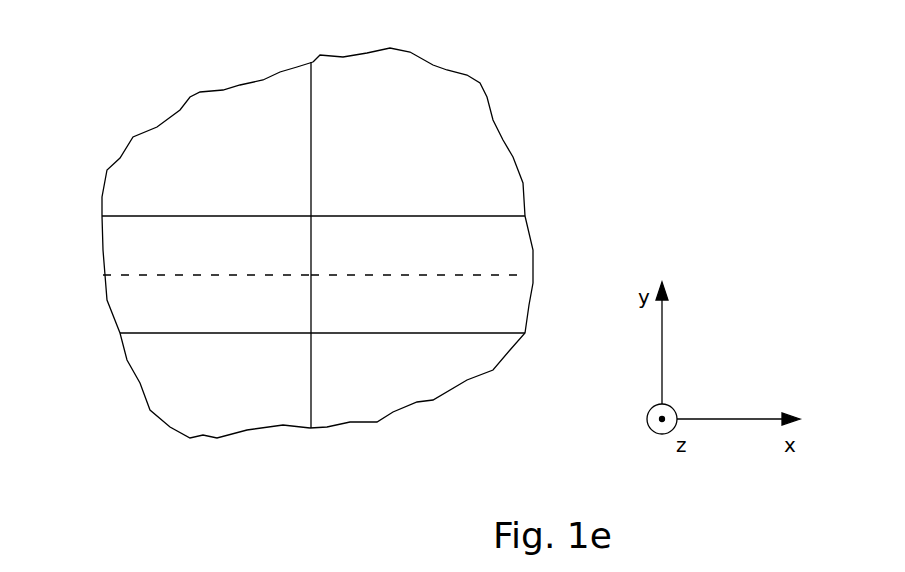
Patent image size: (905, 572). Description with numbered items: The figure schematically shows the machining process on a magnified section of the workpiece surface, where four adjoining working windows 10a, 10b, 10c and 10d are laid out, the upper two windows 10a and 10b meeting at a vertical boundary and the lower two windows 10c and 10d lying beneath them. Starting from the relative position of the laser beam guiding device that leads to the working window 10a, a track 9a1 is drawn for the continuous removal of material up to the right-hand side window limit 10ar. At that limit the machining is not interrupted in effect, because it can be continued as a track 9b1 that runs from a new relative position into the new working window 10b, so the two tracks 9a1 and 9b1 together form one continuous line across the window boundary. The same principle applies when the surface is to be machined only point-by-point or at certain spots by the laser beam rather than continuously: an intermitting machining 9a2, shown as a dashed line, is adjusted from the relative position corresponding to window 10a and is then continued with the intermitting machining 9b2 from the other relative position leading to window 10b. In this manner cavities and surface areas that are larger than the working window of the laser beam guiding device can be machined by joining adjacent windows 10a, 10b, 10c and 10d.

The working window 10a is at (213, 108).
The right-hand side window limit 10ar is at (308, 93).
The working window 10b is at (433, 82).
The working window 10c is at (202, 413).
The working window 10d is at (422, 390).
The track 9a1 is at (133, 213).
The track 9b1 is at (498, 215).
The intermitting machining 9a2 is at (127, 275).
The intermitting machining 9b2 is at (508, 273).